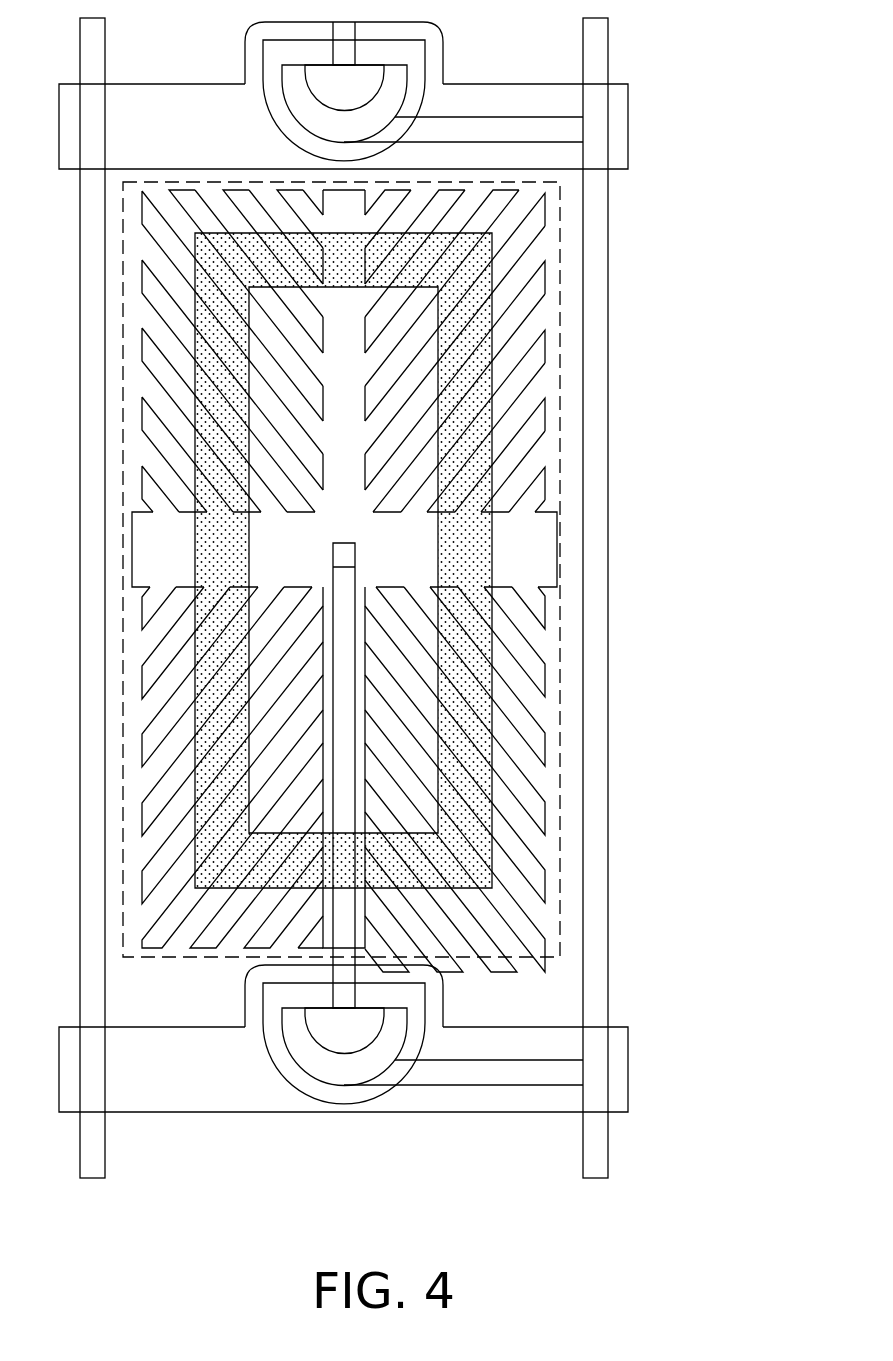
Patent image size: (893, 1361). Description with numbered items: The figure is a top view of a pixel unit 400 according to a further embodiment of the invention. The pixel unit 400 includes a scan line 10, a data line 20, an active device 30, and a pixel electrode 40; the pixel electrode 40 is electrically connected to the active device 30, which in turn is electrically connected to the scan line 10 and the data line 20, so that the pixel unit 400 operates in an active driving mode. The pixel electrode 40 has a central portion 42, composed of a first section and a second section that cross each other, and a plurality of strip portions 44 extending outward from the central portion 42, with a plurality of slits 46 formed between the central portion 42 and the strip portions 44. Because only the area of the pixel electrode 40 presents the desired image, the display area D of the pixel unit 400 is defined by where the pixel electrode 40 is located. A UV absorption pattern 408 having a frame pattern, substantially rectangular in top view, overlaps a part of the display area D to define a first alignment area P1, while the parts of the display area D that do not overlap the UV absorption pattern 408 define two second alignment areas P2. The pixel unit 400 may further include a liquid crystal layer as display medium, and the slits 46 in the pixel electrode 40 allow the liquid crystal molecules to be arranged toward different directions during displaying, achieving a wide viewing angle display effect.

The scan line 10 is at (618, 1058).
The data line 20 is at (598, 1138).
The active device 30 is at (262, 1073).
The pixel electrode 40 is at (453, 581).
The central portion 42 is at (390, 538).
The strip portions 44 is at (410, 440).
The slits 46 is at (525, 333).
The pixel unit 400 is at (417, 632).
The UV absorption pattern 408 is at (490, 673).
The first alignment area P1 is at (450, 560).
The second alignment areas P2 is at (566, 226).
The display area D is at (434, 569).